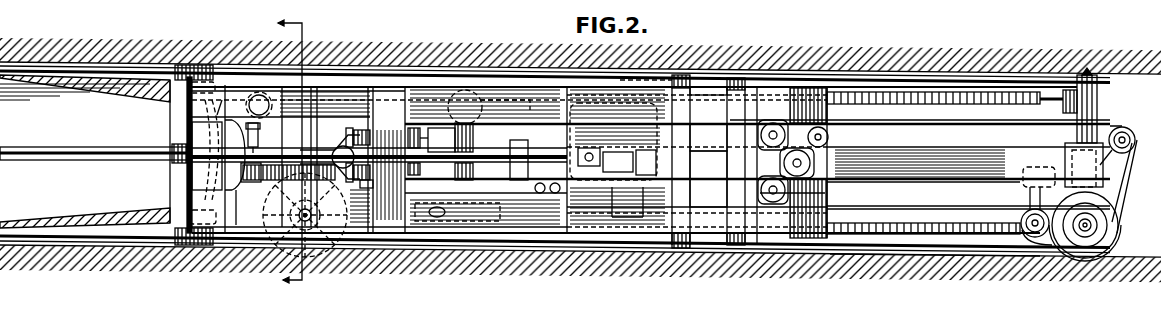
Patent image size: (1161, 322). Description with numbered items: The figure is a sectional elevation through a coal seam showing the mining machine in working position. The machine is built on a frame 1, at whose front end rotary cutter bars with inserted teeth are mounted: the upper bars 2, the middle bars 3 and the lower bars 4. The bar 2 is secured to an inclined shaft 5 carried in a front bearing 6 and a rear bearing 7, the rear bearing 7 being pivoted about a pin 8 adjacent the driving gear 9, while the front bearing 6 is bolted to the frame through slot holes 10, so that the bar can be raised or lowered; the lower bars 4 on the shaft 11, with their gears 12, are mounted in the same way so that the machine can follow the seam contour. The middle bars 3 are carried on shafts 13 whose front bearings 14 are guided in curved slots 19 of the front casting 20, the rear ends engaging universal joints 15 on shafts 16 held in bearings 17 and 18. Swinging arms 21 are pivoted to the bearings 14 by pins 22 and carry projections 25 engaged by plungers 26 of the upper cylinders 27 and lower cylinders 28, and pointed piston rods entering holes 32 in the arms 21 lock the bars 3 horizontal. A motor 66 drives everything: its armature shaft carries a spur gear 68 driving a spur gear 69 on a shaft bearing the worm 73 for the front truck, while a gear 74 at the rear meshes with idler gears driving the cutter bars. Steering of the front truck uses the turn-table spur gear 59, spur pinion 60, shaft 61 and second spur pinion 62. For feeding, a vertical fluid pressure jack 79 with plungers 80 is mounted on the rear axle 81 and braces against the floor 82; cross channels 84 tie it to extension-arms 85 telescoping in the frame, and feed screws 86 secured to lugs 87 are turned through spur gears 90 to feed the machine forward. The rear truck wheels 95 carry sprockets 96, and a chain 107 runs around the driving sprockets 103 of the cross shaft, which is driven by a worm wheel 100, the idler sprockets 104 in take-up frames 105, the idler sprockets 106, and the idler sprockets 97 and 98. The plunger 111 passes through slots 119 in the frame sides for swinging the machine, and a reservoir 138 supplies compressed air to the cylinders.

The frame 1 is at (284, 153).
The upper bars 2 is at (130, 66).
The middle bars 3 is at (82, 152).
The lower bars 4 is at (63, 236).
The inclined shaft 5 is at (320, 90).
The front bearing 6 is at (205, 63).
The rear bearing 7 is at (712, 88).
The pin 8 is at (695, 93).
The driving gear 9 is at (673, 80).
The slot holes 10 is at (195, 76).
The shaft 11 is at (403, 240).
The gears 12 is at (670, 241).
The shafts 13 is at (283, 215).
The bearings 14 is at (205, 160).
The universal joints 15 is at (590, 152).
The shafts 16 is at (643, 163).
The bearings 17 is at (628, 148).
The bearings 18 is at (708, 165).
The curved slots 19 is at (210, 108).
The front casting 20 is at (197, 185).
The swinging arms 21 is at (332, 142).
The pins 22 is at (250, 133).
The projections 25 is at (345, 135).
The plungers 26 is at (362, 128).
The upper fluid pressure cylinders 27 is at (372, 144).
The lower fluid pressure cylinders 28 is at (365, 182).
The holes 32 is at (236, 205).
The spur gear 59 is at (277, 182).
The spur pinion 60 is at (253, 180).
The shaft 61 is at (177, 166).
The second spur pinion 62 is at (257, 94).
The motor 66 is at (512, 135).
The spur gear 68 is at (462, 175).
The spur gear 69 is at (468, 125).
The worm 73 is at (311, 85).
The gear 74 is at (683, 162).
The vertical fluid pressure jack 79 is at (1096, 102).
The plungers 80 is at (1092, 76).
The rear axle 81 is at (1070, 250).
The floor 82 is at (972, 260).
The cross channels 84 is at (1073, 163).
The extension-arms 85 is at (1012, 184).
The feed screws 86 is at (928, 100).
The lugs 87 is at (1067, 93).
The spur gears 90 is at (747, 85).
The truck wheels 95 is at (1058, 238).
The sprocket 96 is at (1088, 237).
The idler sprocket 97 is at (1121, 130).
The idler sprocket 98 is at (1020, 221).
The worm wheel 100 is at (763, 125).
The driving sprocket 103 is at (783, 130).
The idler sprockets 104 is at (840, 157).
The take-up frames 105 is at (915, 143).
The idler sprockets 106 is at (825, 193).
The chain 107 is at (950, 207).
The plunger 111 is at (442, 212).
The slots 119 is at (450, 213).
The reservoir 138 is at (449, 120).